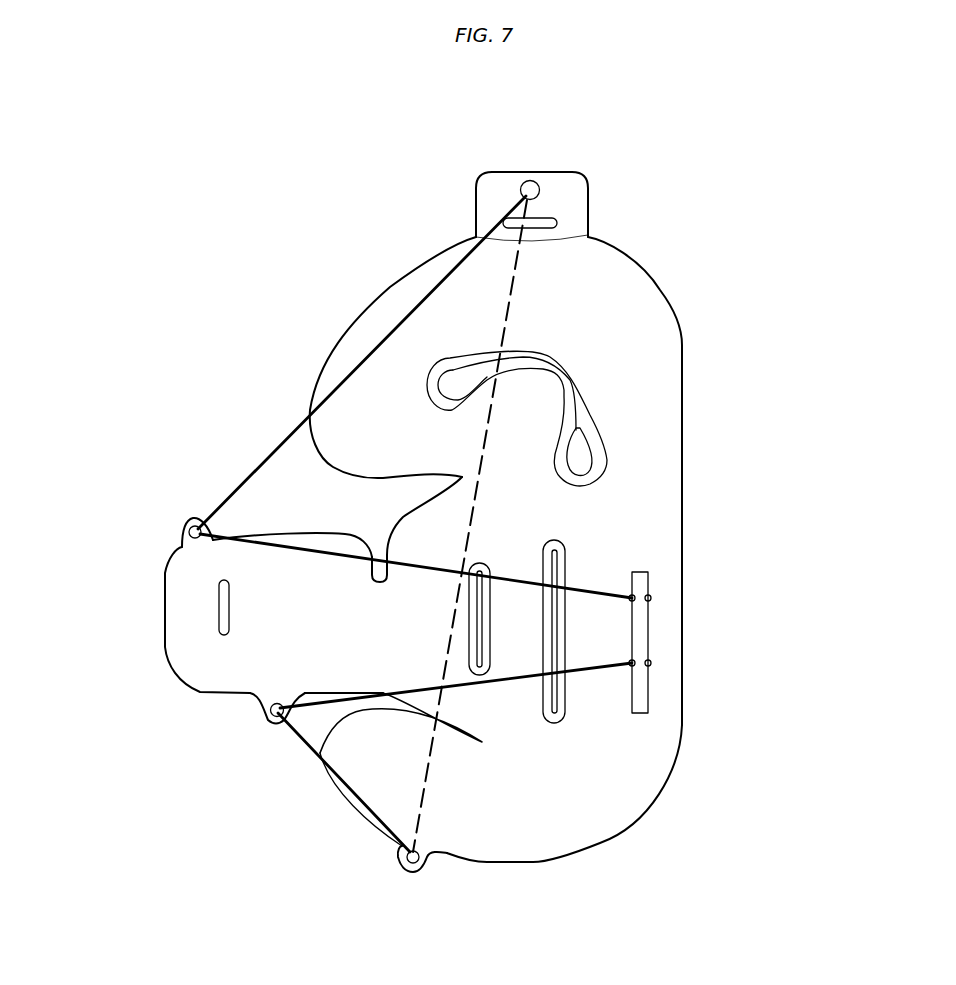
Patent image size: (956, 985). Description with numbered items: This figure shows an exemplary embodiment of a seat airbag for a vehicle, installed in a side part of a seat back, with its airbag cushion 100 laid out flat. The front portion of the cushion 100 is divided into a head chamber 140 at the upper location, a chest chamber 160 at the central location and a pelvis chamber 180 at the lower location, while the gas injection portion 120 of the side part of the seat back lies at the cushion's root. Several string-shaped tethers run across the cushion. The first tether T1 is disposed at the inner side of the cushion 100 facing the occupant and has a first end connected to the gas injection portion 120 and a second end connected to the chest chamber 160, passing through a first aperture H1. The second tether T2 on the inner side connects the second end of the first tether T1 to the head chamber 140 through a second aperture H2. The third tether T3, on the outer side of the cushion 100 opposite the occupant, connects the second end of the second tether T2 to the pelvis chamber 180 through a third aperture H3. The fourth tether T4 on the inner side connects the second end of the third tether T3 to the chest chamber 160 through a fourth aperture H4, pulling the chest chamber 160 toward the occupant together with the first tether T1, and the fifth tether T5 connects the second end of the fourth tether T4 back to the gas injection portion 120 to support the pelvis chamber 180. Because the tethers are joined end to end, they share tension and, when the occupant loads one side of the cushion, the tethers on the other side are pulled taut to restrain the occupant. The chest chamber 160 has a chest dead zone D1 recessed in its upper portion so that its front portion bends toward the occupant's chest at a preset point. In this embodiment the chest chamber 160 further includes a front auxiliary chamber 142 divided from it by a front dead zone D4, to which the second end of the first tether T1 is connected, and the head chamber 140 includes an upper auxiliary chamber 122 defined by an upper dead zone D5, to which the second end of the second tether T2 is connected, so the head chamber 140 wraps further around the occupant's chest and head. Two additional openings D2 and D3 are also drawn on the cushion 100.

The airbag cushion 100 is at (660, 407).
The gas injection portion 120 is at (350, 352).
The upper auxiliary chamber 122 is at (493, 185).
The head chamber 140 is at (645, 642).
The front auxiliary chamber 142 is at (163, 637).
The chest chamber 160 is at (237, 658).
The pelvis chamber 180 is at (498, 862).
The first aperture H1 is at (190, 526).
The second aperture H2 is at (532, 180).
The third aperture H3 is at (408, 868).
The fourth aperture H4 is at (271, 719).
The chest dead zone D1 is at (372, 548).
The second opening (curved slot) D2 is at (560, 374).
The third opening (slot) D3 is at (558, 548).
The front dead zone D4 is at (220, 604).
The upper dead zone D5 is at (550, 218).
The first tether T1 is at (593, 590).
The second tether T2 is at (437, 287).
The third tether T3 is at (513, 295).
The fourth tether T4 is at (345, 787).
The fifth tether T5 is at (593, 673).